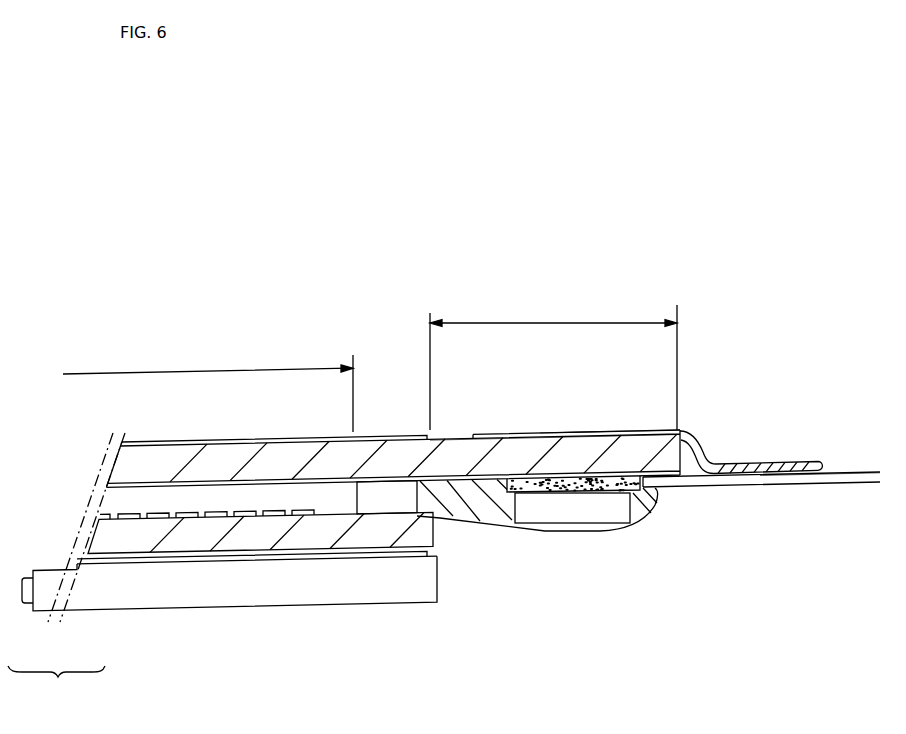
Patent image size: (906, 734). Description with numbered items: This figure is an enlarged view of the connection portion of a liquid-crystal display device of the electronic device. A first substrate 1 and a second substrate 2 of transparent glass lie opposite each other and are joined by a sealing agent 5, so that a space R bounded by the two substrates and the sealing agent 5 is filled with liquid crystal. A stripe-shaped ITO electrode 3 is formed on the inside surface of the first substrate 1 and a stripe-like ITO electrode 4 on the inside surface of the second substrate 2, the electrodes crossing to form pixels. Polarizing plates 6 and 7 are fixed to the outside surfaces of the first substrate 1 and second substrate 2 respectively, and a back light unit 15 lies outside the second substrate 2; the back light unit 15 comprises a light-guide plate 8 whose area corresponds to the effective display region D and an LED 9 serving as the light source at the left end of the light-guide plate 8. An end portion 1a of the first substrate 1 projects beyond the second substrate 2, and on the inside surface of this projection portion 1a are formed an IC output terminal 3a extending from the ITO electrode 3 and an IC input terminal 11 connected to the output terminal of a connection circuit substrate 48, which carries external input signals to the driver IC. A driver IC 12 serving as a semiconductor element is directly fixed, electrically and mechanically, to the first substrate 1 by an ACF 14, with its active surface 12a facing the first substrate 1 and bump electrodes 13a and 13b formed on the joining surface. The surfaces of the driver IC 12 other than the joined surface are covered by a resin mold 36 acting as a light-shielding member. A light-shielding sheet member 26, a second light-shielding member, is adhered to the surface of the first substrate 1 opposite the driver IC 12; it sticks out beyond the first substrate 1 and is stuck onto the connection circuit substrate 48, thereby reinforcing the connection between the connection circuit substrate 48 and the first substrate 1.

The first substrate 1 is at (452, 453).
The end portion of the first substrate 1a is at (553, 362).
The second substrate 2 is at (324, 541).
The ITO electrode 3 is at (197, 487).
The IC output terminal 3a is at (498, 500).
The ITO electrode 4 is at (257, 505).
The sealing agent 5 is at (382, 508).
The polarizing plate 6 is at (256, 441).
The polarizing plate 7 is at (152, 570).
The light-guide plate 8 is at (88, 608).
The LED 9 is at (25, 612).
The IC input terminal 11 is at (690, 458).
The driver IC 12 is at (584, 518).
The active surface 12a is at (560, 476).
The bump electrode 13a is at (527, 478).
The bump electrode 13b is at (604, 434).
The ACF 14 is at (655, 489).
The back light unit 15 is at (56, 685).
The light-shielding sheet member 26 is at (586, 432).
The resin mold 36 is at (645, 503).
The connection circuit substrate 48 is at (793, 482).
The effective display region D is at (208, 390).
The space R is at (114, 503).